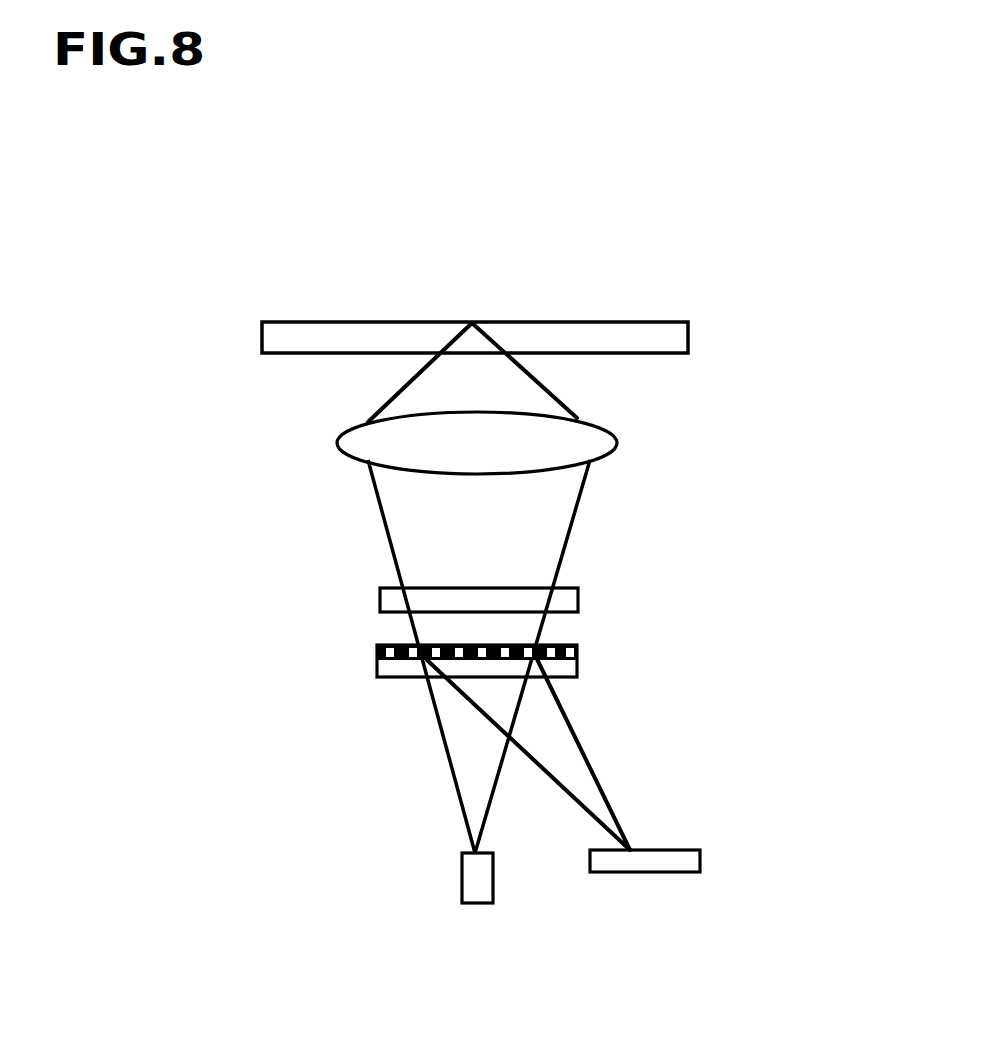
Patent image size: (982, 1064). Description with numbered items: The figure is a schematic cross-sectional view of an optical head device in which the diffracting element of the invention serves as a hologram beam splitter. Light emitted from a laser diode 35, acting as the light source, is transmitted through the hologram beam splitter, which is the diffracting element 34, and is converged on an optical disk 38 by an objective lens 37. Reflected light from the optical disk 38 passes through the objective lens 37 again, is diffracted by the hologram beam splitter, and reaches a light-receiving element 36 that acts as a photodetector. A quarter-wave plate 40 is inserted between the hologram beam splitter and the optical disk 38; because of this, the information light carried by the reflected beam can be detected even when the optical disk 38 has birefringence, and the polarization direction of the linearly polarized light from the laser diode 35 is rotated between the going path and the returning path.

The optical disk 38 is at (540, 283).
The objective lens 37 is at (348, 412).
The quarter-wave plate 40 is at (608, 533).
The diffracting element 34 is at (586, 602).
The laser diode 35 is at (350, 821).
The light-receiving element 36 is at (743, 799).